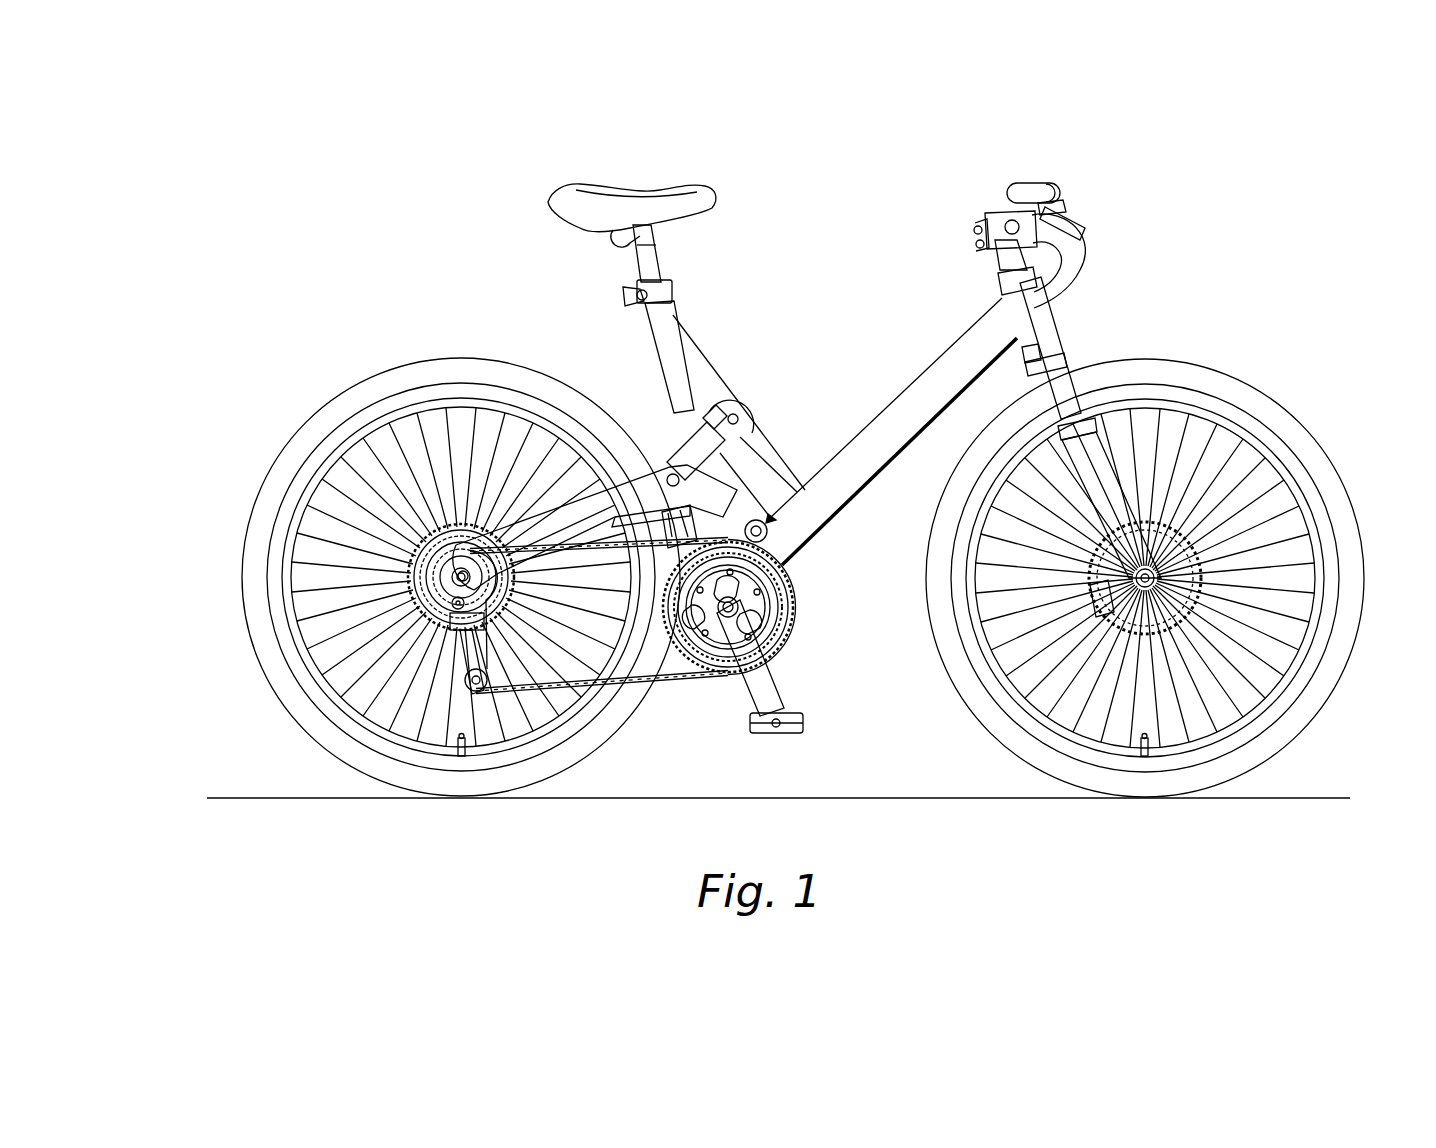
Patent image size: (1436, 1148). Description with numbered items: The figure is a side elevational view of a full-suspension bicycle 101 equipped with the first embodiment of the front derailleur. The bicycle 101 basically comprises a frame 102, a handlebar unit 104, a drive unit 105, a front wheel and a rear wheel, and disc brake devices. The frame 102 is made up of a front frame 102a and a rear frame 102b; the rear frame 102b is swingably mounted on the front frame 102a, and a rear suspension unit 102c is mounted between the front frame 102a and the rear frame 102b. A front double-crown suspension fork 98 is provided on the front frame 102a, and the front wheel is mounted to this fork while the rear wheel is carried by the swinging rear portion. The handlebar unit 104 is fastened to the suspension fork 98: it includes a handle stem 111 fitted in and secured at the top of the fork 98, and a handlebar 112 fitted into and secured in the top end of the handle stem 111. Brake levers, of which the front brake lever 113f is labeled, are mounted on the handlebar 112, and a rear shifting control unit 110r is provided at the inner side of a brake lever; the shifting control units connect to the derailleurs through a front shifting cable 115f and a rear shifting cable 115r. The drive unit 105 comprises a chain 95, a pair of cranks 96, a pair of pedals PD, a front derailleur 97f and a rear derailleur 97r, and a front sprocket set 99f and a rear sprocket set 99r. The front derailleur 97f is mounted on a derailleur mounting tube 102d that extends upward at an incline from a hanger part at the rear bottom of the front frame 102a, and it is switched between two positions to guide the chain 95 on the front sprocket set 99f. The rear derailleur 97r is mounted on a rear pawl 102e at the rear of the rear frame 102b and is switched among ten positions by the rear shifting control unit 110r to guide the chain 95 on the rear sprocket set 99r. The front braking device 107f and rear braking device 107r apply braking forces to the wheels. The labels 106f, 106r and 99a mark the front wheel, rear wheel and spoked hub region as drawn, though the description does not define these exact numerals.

The bicycle 101 is at (833, 248).
The frame 102 is at (898, 360).
The front frame 102a is at (848, 463).
The rear frame 102b is at (592, 505).
The rear suspension unit 102c is at (698, 452).
The derailleur mounting tube 102d is at (793, 423).
The rear pawl 102e is at (457, 582).
The handlebar unit 104 is at (990, 203).
The drive unit 105 is at (708, 697).
The rear wheel 106r is at (362, 397).
The front wheel 106f is at (1290, 398).
The rear braking device 107r is at (440, 440).
The front braking device 107f is at (1262, 508).
The rear shifting control unit 110r is at (1058, 192).
The handle stem 111 is at (1003, 212).
The handlebar 112 is at (1047, 190).
The front brake lever 113f is at (1075, 215).
The rear shifting cable 115r is at (1082, 250).
The front shifting cable 115f is at (1062, 272).
The front double-crown suspension fork 98 is at (1090, 460).
The rear hub 99a is at (484, 510).
The rear sprocket set 99r is at (455, 576).
The front sprocket set 99f is at (790, 580).
The rear derailleur 97r is at (462, 668).
The front derailleur 97f is at (783, 528).
The chain 95 is at (676, 683).
The crank 96 is at (770, 662).
The pedal PD is at (803, 730).